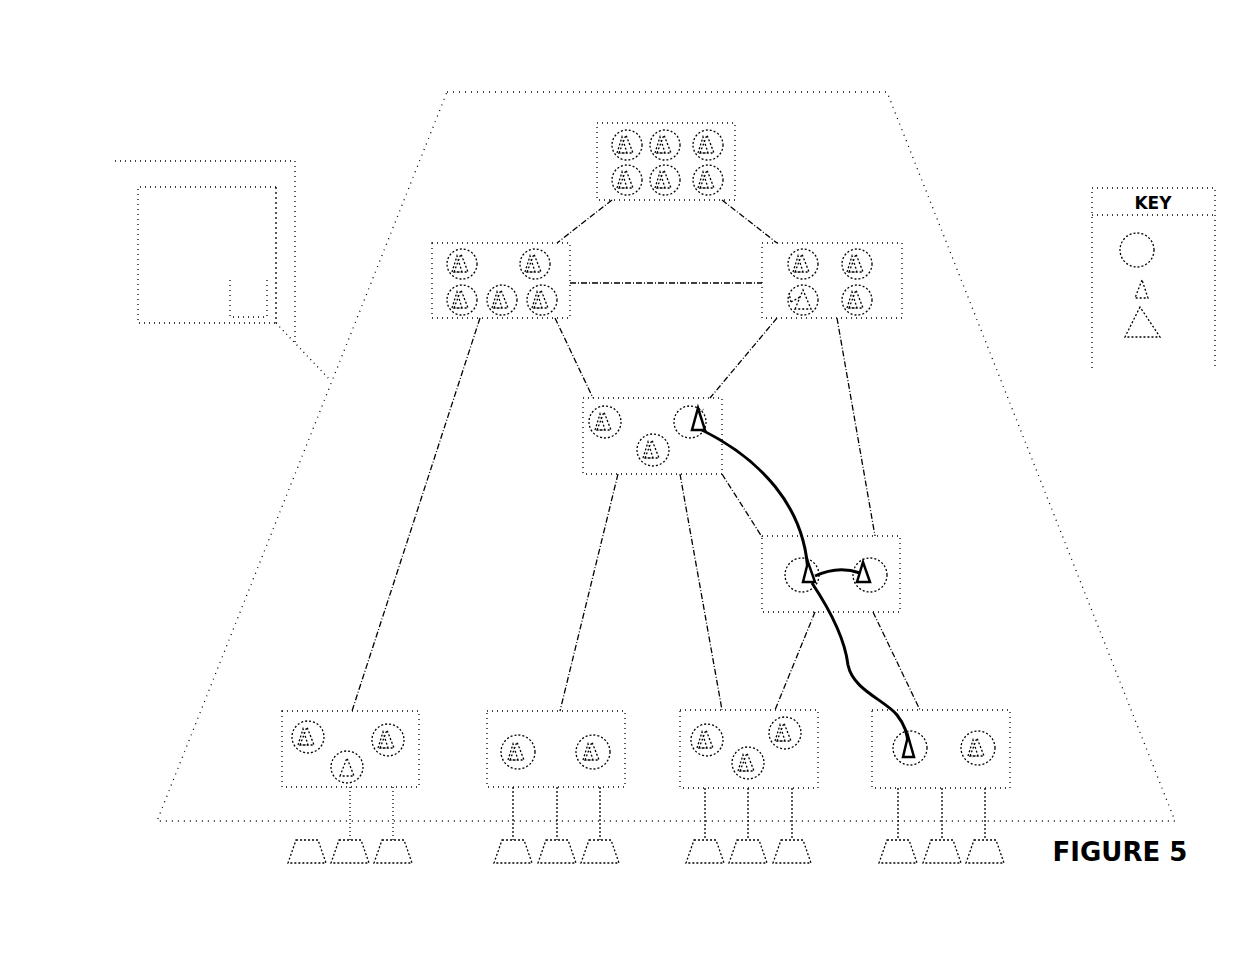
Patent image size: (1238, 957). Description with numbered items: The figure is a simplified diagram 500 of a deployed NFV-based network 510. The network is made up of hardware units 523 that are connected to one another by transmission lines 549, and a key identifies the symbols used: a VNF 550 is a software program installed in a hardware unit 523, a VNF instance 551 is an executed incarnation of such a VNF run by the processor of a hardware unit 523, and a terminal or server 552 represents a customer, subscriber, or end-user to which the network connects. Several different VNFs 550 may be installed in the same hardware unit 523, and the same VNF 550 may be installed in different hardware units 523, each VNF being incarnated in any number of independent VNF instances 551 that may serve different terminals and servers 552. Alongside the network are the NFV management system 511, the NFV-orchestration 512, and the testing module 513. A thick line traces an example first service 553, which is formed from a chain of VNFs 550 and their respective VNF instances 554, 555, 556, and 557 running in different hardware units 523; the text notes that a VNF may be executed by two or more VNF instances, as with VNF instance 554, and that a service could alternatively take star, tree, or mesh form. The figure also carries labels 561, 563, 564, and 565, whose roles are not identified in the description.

The diagram 500 is at (1144, 97).
The NFV-based network 510 is at (462, 90).
The NFV management system 511 is at (187, 160).
The NFV-orchestration (NFV-O) 512 is at (242, 185).
The testing module 513 is at (243, 282).
The hardware unit 523 is at (605, 120).
The transmission line 549 is at (580, 222).
The VNF 550 is at (1153, 238).
The VNF instance 551 is at (1147, 287).
The terminal or server 552 is at (1155, 325).
The first service 553 is at (856, 688).
The VNF instance 554 is at (897, 747).
The VNF instance 555 is at (800, 608).
The VNF instance 556 is at (900, 578).
The VNF instance 557 is at (720, 427).
The node element 561 is at (802, 732).
The source data unit 563 is at (688, 400).
The node element 564 is at (803, 322).
The source node element 565 is at (707, 404).